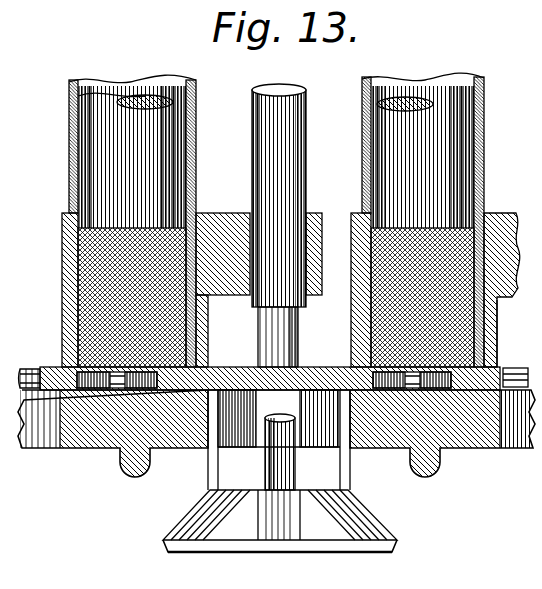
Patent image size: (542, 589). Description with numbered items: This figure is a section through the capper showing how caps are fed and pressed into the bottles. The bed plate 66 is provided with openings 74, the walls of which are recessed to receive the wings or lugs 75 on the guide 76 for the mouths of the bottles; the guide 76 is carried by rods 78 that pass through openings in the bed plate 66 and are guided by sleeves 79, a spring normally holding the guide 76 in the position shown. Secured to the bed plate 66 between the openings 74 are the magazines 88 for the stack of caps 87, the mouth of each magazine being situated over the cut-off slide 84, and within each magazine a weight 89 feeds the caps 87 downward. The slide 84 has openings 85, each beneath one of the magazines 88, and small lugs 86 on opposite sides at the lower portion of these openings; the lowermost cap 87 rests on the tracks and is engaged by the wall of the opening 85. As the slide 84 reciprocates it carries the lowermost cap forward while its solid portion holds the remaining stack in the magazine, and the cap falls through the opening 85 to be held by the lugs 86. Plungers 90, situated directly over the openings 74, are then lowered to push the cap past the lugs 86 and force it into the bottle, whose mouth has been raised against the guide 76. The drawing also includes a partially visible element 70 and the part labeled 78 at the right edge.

The bed plate 66 is at (484, 433).
The frame portion 70 is at (513, 290).
The openings 74 is at (292, 415).
The wings or lugs 75 is at (213, 460).
The guide 76 is at (222, 525).
The rods 78 is at (519, 335).
The sleeves 79 is at (267, 341).
The cut-off slide 84 is at (317, 377).
The openings 85 is at (53, 378).
The small lugs 86 is at (117, 380).
The caps 87 is at (100, 263).
The magazines or containers 88 is at (197, 152).
The weight 89 is at (276, 157).
The plungers 90 is at (291, 173).